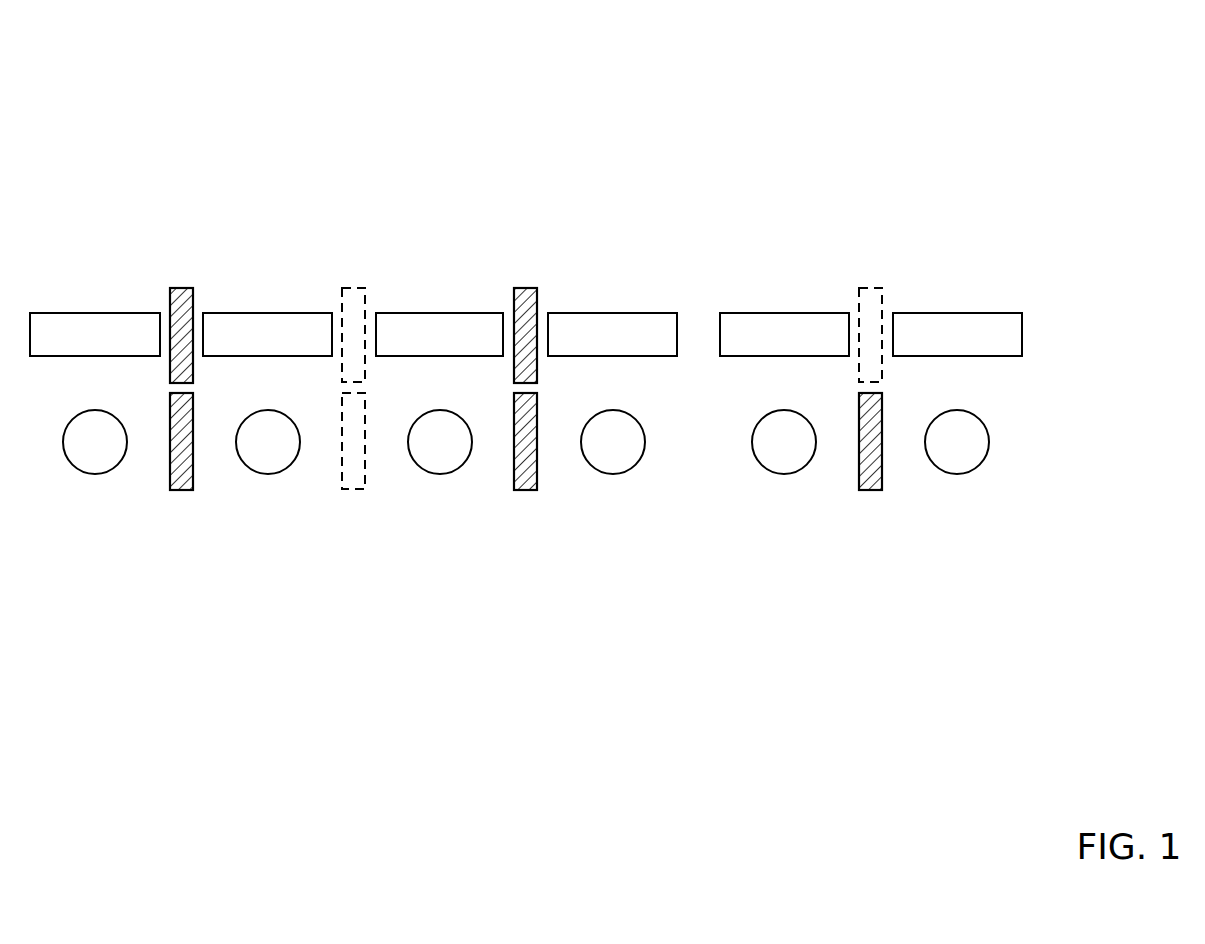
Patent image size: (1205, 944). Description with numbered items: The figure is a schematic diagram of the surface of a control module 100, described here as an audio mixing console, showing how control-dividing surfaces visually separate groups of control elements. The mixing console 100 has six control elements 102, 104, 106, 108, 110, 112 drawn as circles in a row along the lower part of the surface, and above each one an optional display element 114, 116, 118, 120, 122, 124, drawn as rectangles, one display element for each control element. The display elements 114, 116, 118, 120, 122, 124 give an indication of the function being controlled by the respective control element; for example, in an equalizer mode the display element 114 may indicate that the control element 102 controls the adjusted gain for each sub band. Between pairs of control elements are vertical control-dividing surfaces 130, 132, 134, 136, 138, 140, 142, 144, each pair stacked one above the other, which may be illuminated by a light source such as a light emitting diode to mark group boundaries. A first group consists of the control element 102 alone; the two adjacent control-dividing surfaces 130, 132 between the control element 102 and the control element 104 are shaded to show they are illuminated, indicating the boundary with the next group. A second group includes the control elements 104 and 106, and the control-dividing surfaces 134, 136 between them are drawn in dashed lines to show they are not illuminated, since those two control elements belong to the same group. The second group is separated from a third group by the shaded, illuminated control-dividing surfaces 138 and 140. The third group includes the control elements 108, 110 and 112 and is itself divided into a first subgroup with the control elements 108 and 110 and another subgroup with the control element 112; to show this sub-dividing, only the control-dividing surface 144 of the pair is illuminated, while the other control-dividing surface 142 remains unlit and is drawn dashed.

The control module surface 100 is at (788, 142).
The control element 102 is at (95, 474).
The control element 104 is at (268, 474).
The control element 106 is at (440, 474).
The control element 108 is at (613, 474).
The control element 110 is at (784, 474).
The control element 112 is at (957, 474).
The display element 114 is at (142, 313).
The display element 116 is at (314, 313).
The display element 118 is at (486, 313).
The display element 120 is at (658, 313).
The display element 122 is at (831, 313).
The display element 124 is at (1003, 313).
The control-dividing surface 130 is at (184, 283).
The control-dividing surface 132 is at (184, 490).
The control-dividing surface 134 is at (357, 283).
The control-dividing surface 136 is at (357, 490).
The control-dividing surface 138 is at (529, 283).
The control-dividing surface 140 is at (529, 490).
The control-dividing surface 142 is at (874, 283).
The control-dividing surface 144 is at (874, 490).